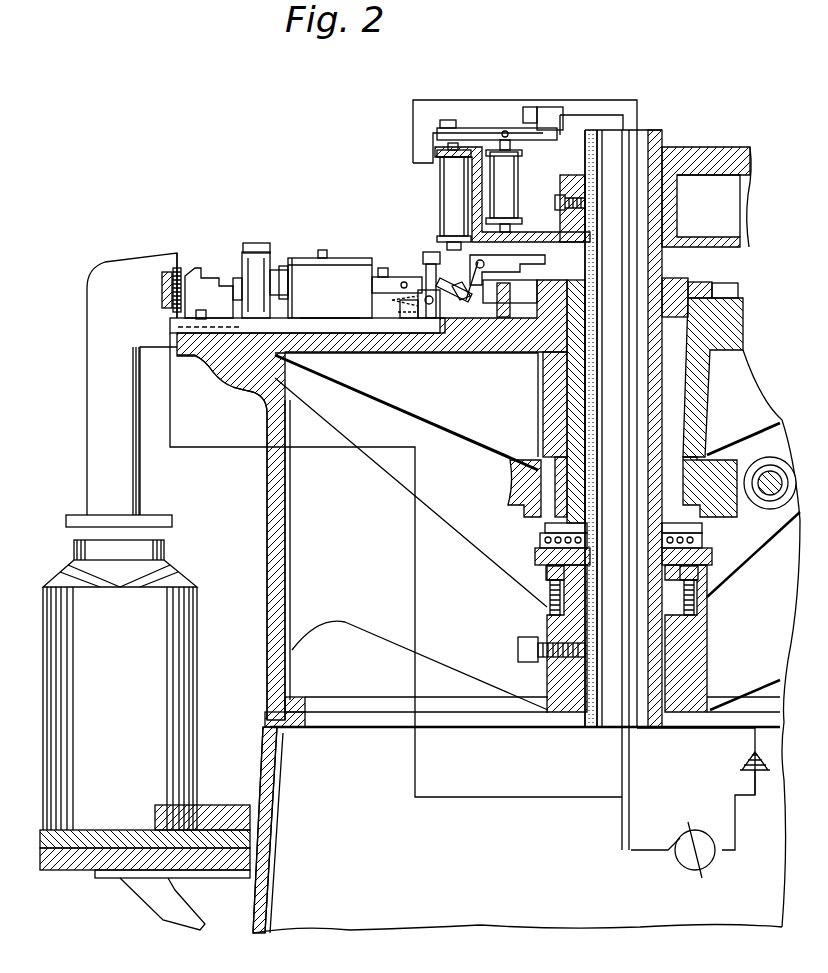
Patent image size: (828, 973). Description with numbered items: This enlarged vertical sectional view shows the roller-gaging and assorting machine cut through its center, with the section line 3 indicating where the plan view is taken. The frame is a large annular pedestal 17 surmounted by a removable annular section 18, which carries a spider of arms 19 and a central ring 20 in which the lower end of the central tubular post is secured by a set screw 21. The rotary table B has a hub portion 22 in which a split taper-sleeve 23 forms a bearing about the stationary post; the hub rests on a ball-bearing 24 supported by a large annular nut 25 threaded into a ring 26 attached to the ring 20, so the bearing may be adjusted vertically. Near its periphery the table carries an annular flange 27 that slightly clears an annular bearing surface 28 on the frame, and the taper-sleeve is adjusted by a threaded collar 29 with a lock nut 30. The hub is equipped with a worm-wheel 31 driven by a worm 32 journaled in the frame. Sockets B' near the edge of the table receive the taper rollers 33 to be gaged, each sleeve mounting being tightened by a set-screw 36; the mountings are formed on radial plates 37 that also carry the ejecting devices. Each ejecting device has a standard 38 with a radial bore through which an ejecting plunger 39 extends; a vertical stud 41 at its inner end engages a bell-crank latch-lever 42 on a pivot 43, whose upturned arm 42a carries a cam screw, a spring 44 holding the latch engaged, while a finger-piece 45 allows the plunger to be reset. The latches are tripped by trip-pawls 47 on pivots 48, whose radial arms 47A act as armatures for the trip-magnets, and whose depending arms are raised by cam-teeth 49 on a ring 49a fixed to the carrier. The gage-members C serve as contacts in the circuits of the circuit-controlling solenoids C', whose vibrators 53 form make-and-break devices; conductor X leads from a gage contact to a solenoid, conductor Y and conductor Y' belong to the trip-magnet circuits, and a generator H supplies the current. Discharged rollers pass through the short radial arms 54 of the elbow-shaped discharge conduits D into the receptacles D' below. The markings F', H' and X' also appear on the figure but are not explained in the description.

The section line 3 is at (200, 243).
The annular standard or pedestal 17 is at (519, 827).
The removable annular section 18 is at (267, 549).
The arms 19 is at (447, 540).
The central ring 20 is at (706, 645).
The set screw 21 is at (518, 649).
The hub portion or sleeve 22 is at (712, 392).
The split taper-sleeve 23 is at (543, 380).
The ball-bearing 24 is at (706, 548).
The annular nut 25 is at (540, 553).
The ring 26 is at (545, 589).
The annular flange 27 is at (212, 370).
The annular bearing surface 28 is at (256, 395).
The threaded collar 29 is at (680, 285).
The lock nut 30 is at (706, 287).
The worm-wheel 31 is at (508, 478).
The worm 32 is at (767, 462).
The rollers or taper pieces 33 is at (236, 275).
The set-screw 36 is at (268, 255).
The radial plates 37 is at (345, 337).
The standard 38 is at (321, 288).
The ejecting plunger 39 is at (382, 270).
The vertical pin or stud 41 is at (400, 276).
The bell-crank lever 42 is at (425, 262).
The upturned arm 42a is at (454, 278).
The pivot 43 is at (442, 298).
The spring 44 is at (397, 320).
The vertical stud or finger-piece 45 is at (321, 254).
The trip-pawls 47 is at (470, 302).
The radial arms 47A is at (476, 322).
The pivots 48 is at (500, 262).
The cam-teeth 49 is at (524, 275).
The ring 49a is at (540, 290).
The vibrators 53 is at (472, 130).
The short radial arms 54 is at (142, 332).
The rotary table B is at (411, 531).
The sockets B' is at (256, 261).
The gage-members C is at (209, 271).
The circuit-controlling solenoids C' is at (512, 194).
The discharge conduits D is at (111, 390).
The receptacles D' is at (120, 685).
The arm F' is at (161, 262).
The generator H is at (498, 723).
The frame block H' is at (541, 638).
The conductor X is at (396, 577).
The contact X' is at (557, 122).
The conductor Y is at (611, 476).
The conductor Y' is at (450, 126).